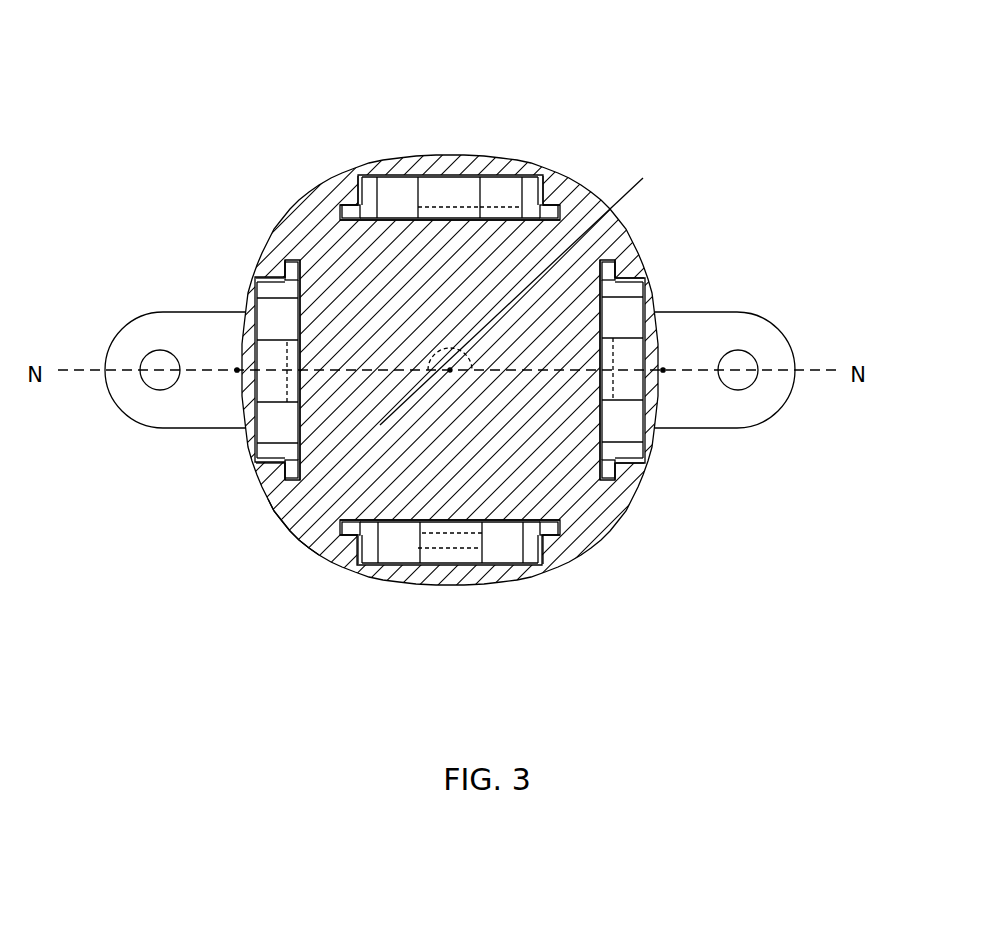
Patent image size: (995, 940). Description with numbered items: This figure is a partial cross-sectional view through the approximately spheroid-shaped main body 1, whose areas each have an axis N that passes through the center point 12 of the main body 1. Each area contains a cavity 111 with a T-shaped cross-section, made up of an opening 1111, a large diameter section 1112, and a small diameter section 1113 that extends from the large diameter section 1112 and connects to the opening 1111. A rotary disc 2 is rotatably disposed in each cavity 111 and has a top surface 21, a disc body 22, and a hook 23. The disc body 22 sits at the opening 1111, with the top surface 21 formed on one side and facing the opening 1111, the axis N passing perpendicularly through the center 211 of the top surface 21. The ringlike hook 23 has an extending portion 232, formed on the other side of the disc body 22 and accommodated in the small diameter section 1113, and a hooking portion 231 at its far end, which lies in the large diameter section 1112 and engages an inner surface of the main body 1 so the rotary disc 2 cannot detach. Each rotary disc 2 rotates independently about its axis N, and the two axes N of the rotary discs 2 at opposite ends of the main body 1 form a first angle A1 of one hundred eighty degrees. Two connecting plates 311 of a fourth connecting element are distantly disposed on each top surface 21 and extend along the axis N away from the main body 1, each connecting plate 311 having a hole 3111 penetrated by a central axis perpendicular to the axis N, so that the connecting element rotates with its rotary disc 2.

The main body 1 is at (331, 202).
The cavity 111 is at (418, 36).
The opening 1111 is at (352, 212).
The large diameter section 1112 is at (360, 176).
The small diameter section 1113 is at (356, 200).
The center point 12 is at (300, 534).
The rotary disc 2 is at (478, 364).
The top surface 21 is at (447, 160).
The disc body 22 is at (522, 172).
The hook 23 is at (555, 172).
The hooking portion 231 is at (451, 361).
The extending portion 232 is at (499, 190).
The center 211 is at (235, 369).
The connecting plate 311 is at (112, 336).
The hole 3111 is at (160, 349).
The first angle A1 is at (643, 178).